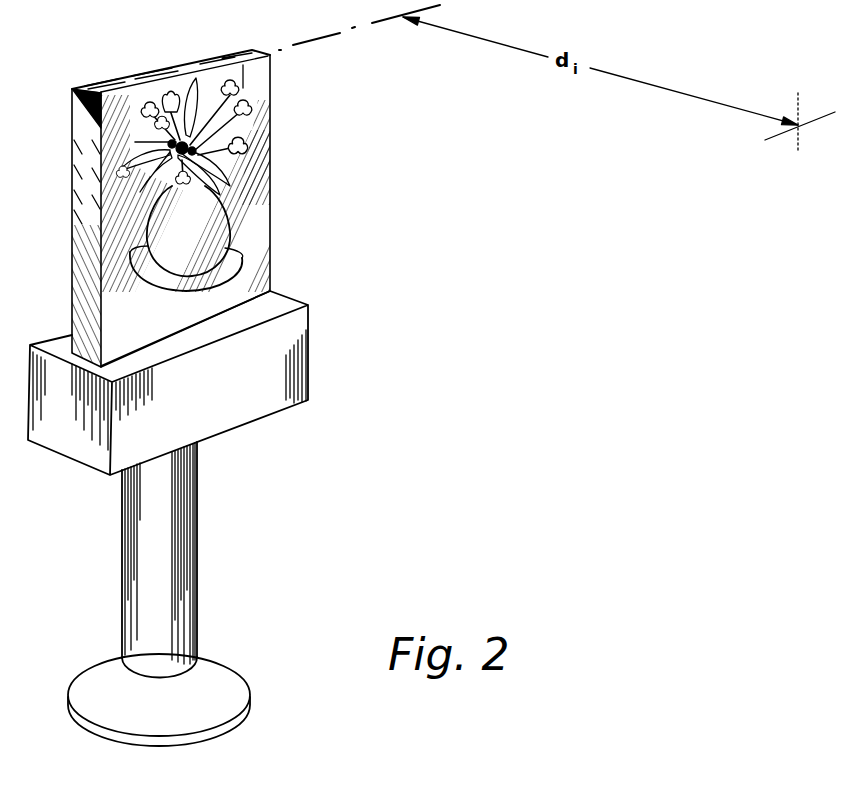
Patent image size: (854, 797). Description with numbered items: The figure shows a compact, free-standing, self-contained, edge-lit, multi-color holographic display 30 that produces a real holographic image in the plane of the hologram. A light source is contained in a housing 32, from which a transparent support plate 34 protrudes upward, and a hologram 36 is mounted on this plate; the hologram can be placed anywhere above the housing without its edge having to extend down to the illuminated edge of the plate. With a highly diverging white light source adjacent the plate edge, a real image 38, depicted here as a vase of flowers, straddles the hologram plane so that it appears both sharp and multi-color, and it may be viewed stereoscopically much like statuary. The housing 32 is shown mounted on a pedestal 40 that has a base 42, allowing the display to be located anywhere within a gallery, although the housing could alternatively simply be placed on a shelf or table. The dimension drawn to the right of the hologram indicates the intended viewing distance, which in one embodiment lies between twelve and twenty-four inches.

The holographic display 30 is at (284, 146).
The housing 32 is at (309, 357).
The transparent support plate 34 is at (241, 46).
The hologram 36 is at (110, 228).
The real image 38 is at (226, 243).
The pedestal 40 is at (187, 556).
The base 42 is at (233, 678).